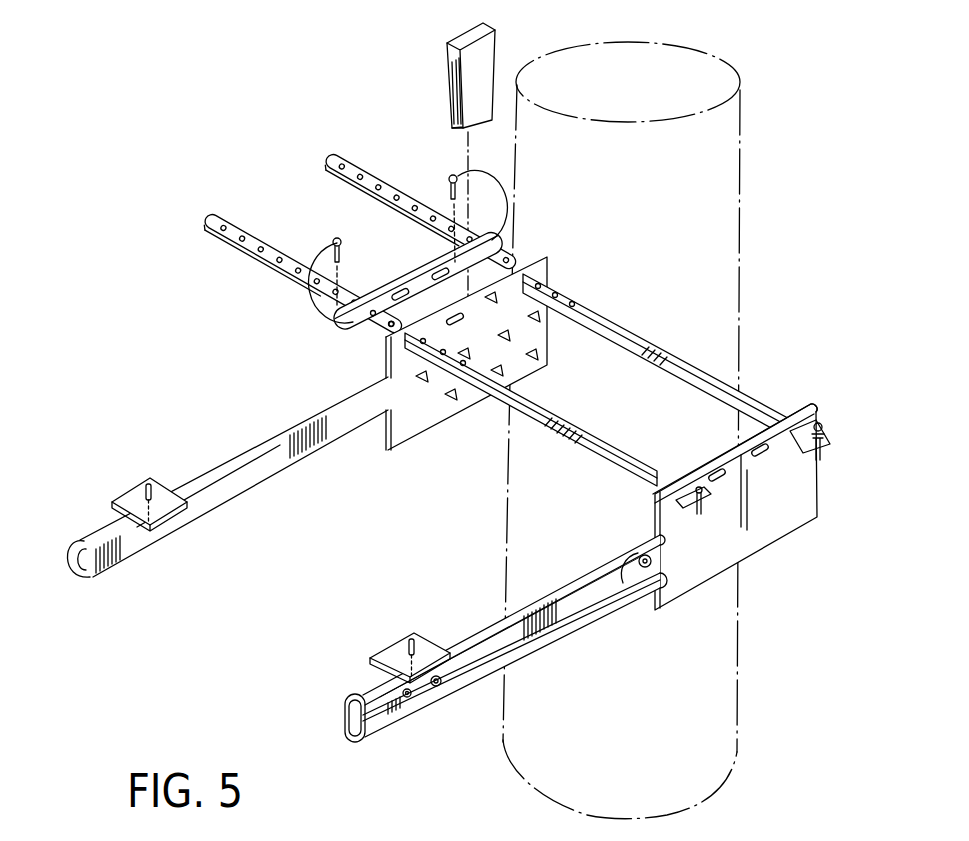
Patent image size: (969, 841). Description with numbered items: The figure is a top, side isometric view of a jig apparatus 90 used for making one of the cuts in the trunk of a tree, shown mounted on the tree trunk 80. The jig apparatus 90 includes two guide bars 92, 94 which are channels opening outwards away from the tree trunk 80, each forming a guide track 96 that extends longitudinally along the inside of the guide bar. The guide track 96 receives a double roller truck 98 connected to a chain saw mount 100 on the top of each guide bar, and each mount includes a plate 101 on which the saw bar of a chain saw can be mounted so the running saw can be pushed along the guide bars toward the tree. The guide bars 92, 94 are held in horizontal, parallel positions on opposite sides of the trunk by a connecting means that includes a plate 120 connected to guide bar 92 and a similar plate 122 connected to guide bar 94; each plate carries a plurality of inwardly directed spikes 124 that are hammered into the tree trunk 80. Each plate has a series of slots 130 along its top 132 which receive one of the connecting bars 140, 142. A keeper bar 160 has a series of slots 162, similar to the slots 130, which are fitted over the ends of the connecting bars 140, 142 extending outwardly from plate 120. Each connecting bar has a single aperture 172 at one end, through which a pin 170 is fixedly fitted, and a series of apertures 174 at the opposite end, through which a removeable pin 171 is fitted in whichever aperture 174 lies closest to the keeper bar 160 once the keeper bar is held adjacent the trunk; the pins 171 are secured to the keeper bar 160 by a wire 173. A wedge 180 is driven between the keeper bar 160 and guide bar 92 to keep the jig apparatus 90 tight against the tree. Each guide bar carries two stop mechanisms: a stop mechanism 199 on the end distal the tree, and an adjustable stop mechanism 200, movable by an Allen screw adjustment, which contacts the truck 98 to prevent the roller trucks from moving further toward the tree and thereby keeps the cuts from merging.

The tree trunk 80 is at (740, 148).
The jig apparatus 90 is at (606, 380).
The guide bar 92 is at (157, 537).
The guide bar 94 is at (515, 646).
The guide track 96 is at (507, 638).
The double roller truck 98 is at (437, 690).
The chain saw mount 100 is at (264, 546).
The plate 101 is at (137, 480).
The plate 120 is at (510, 354).
The plate 122 is at (768, 535).
The spikes 124 is at (458, 395).
The slots 130 is at (762, 440).
The top 132 is at (756, 425).
The connecting bar 140 is at (601, 450).
The connecting bar 142 is at (637, 330).
The keeper bar 160 is at (405, 292).
The slots 162 is at (386, 339).
The pin 170 is at (822, 425).
The removeable pin 171 is at (352, 248).
The aperture 172 is at (830, 441).
The wire 173 is at (308, 303).
The apertures 174 is at (362, 176).
The wedge 180 is at (445, 45).
The stop mechanism 199 is at (72, 553).
The adjustable stop mechanism 200 is at (623, 577).